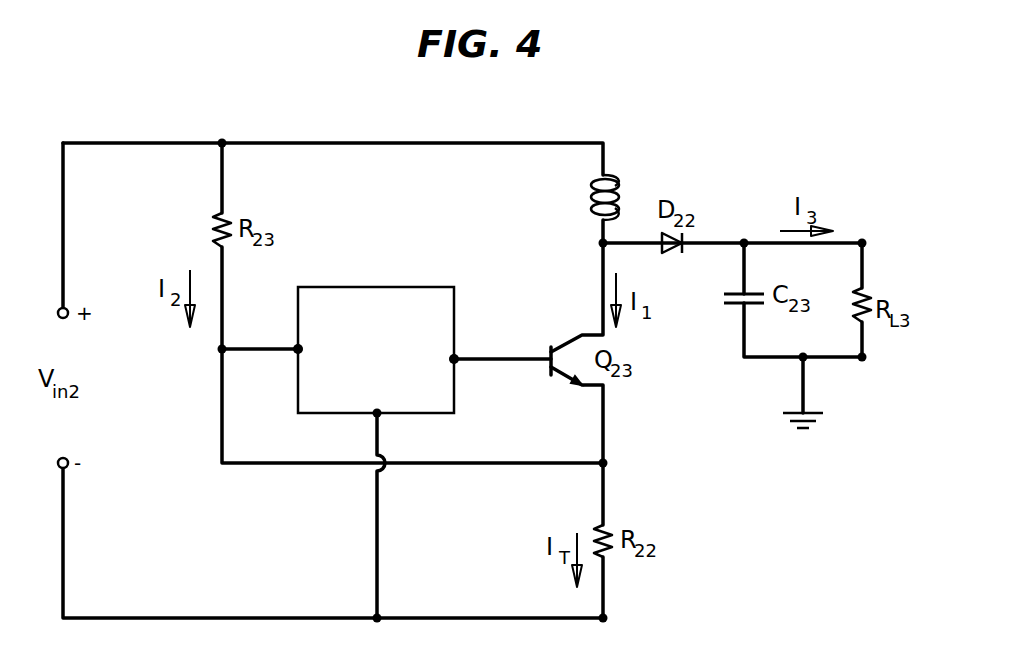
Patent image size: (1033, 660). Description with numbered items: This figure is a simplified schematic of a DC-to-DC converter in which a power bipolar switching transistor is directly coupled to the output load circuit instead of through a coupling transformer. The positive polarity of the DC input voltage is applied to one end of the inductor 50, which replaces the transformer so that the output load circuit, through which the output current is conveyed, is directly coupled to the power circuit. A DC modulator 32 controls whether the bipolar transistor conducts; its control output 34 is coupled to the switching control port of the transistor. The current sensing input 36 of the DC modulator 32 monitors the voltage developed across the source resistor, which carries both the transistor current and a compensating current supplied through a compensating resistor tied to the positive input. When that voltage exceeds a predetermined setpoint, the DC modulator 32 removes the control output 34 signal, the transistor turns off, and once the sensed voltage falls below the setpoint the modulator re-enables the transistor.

The DC modulator 32 is at (325, 287).
The control output 34 is at (454, 359).
The current sensing input 36 is at (298, 349).
The inductor 50 is at (590, 199).